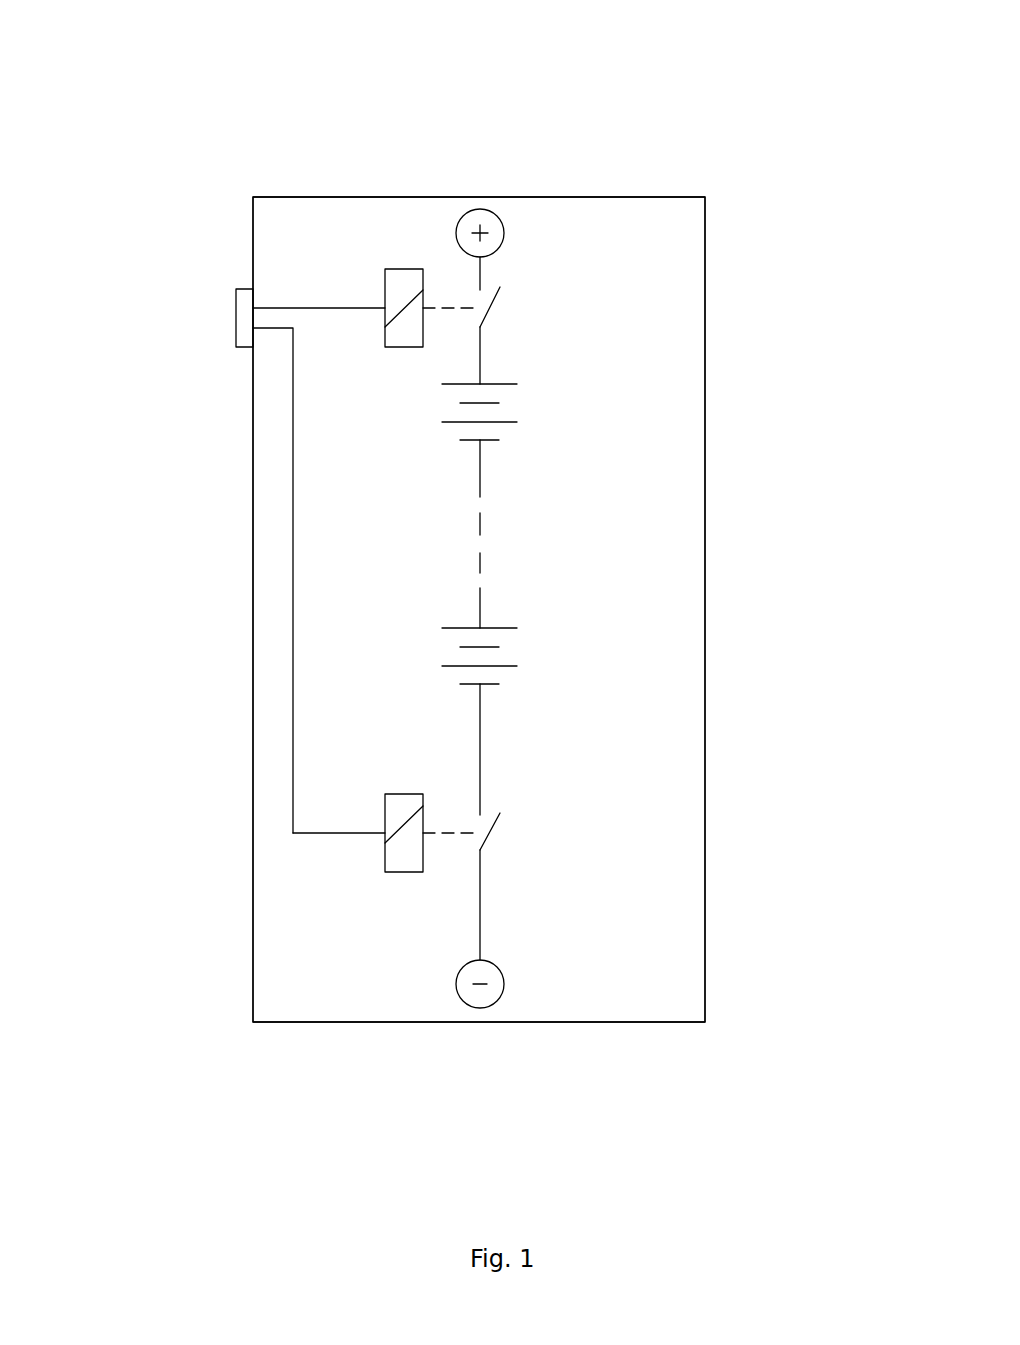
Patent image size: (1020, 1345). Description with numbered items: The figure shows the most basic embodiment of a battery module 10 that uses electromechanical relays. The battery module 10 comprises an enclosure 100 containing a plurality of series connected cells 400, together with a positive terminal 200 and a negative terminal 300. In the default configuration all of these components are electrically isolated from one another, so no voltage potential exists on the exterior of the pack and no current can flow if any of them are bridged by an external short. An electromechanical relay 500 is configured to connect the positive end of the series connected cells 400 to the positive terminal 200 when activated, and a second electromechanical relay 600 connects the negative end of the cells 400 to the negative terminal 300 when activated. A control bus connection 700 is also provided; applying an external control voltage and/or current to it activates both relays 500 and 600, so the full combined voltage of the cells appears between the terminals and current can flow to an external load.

The battery module 10 is at (648, 197).
The enclosure 100 is at (628, 835).
The positive terminal 200 is at (471, 209).
The negative terminal 300 is at (500, 1005).
The series connected cells 400 is at (519, 404).
The electromechanical relay 500 is at (403, 269).
The electromechanical relay 600 is at (403, 872).
The control bus connection 700 is at (235, 318).